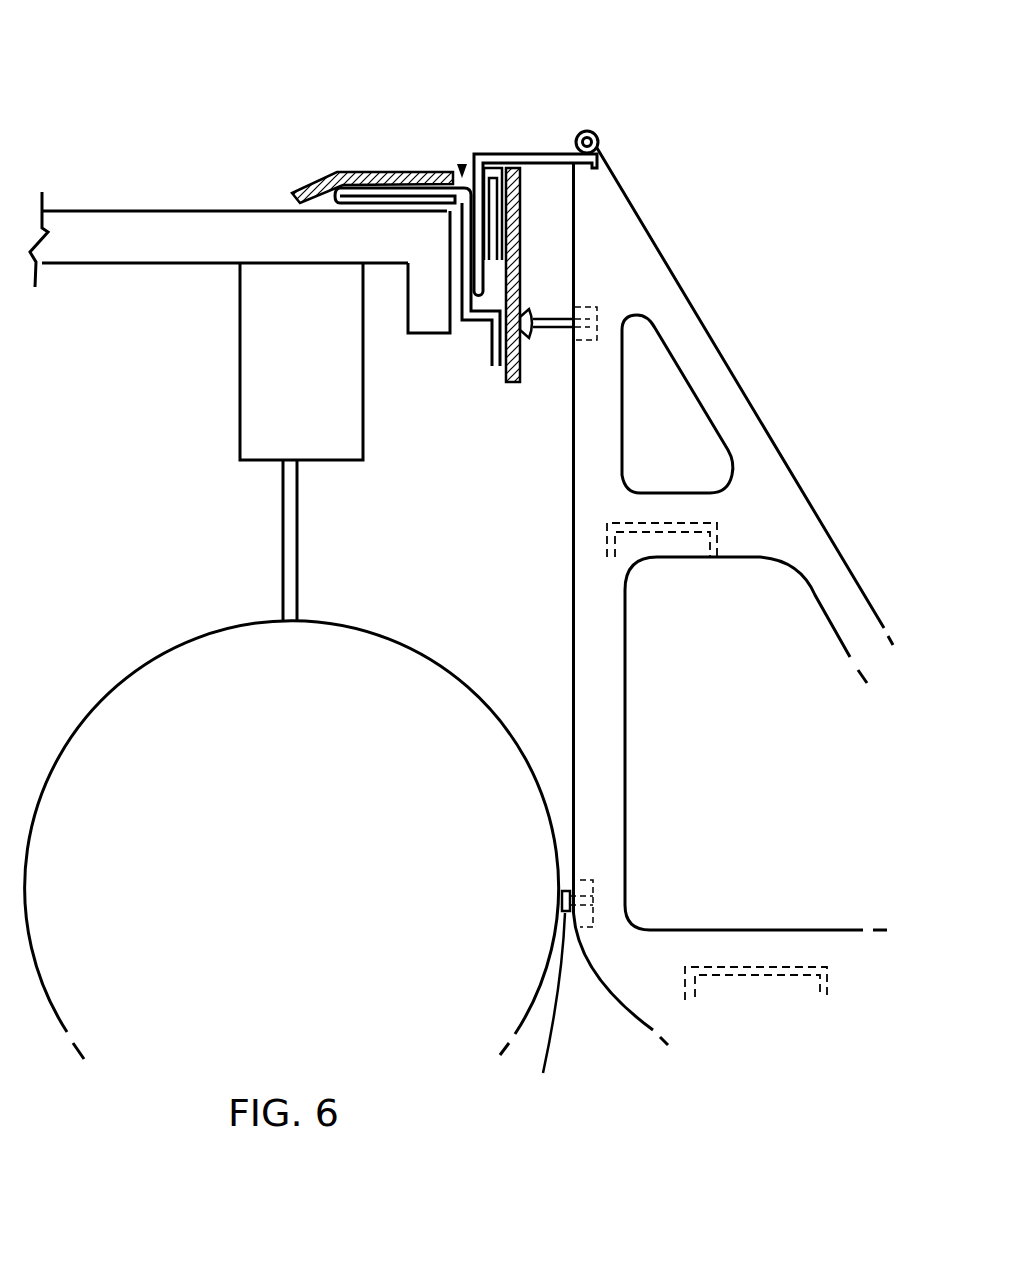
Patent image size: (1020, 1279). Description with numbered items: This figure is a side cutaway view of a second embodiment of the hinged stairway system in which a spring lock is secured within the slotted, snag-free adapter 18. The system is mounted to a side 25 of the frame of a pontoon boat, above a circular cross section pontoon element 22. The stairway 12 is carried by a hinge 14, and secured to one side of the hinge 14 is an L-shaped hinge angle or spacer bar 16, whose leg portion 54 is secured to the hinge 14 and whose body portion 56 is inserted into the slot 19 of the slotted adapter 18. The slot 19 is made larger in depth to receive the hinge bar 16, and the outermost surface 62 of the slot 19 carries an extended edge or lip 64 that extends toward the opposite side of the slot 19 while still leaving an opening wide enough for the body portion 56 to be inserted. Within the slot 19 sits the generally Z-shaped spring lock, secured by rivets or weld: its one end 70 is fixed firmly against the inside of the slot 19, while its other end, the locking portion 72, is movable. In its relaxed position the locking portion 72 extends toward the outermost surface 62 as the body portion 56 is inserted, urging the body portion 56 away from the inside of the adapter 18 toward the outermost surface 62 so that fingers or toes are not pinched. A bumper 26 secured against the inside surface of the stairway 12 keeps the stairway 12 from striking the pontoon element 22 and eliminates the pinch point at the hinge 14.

The stairway 12 is at (562, 569).
The hinge 14 is at (598, 133).
The hinge angle or spacer bar 16 is at (547, 161).
The slotted, snag-free adapter 18 is at (317, 182).
The slot 19 is at (462, 166).
The pontoon element 22 is at (296, 870).
The side 25 is at (430, 291).
The bumper 26 is at (561, 996).
The leg portion 54 is at (513, 155).
The body portion 56 is at (480, 258).
The outermost surface 62 is at (493, 303).
The extended edge or lip 64 is at (495, 167).
The one end 70 is at (508, 352).
The locking portion 72 is at (455, 201).